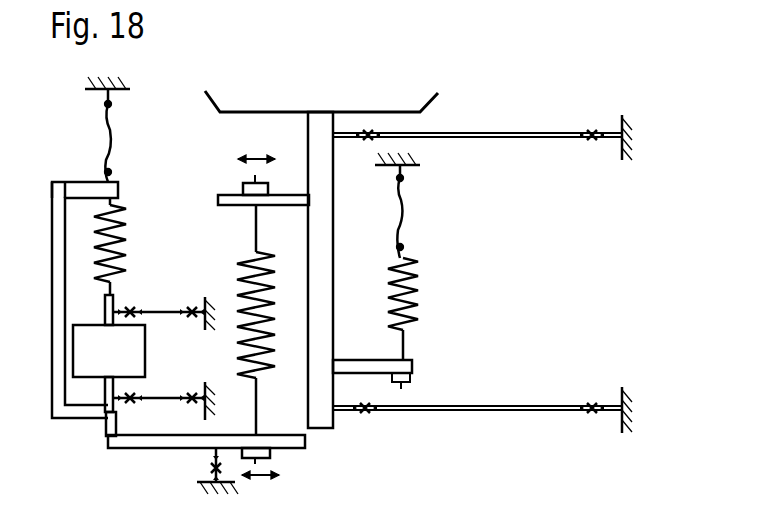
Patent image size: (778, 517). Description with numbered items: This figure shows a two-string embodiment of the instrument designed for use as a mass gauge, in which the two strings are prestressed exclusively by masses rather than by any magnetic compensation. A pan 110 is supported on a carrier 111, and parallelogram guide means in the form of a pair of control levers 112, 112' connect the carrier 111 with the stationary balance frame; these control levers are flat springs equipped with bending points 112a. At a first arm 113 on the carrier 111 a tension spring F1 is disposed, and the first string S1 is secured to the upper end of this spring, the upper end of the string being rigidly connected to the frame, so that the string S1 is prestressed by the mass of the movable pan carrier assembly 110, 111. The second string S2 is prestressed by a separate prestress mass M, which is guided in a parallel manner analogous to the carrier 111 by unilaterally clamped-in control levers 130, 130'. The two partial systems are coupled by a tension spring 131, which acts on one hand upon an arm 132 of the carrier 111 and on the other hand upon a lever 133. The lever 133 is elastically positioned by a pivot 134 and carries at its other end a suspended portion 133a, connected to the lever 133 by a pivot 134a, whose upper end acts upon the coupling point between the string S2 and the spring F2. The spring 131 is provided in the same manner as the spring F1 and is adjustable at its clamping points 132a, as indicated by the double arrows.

The pan 110 is at (290, 111).
The carrier 111 is at (326, 430).
The control lever 112 is at (482, 127).
The control lever 112' is at (482, 437).
The bending points 112a is at (368, 128).
The first arm 113 is at (413, 367).
The control lever 130 is at (164, 321).
The control lever 130' is at (164, 390).
The tension spring 131 is at (248, 262).
The arm 132 is at (218, 206).
The slider element 132a is at (243, 188).
The lever 133 is at (122, 452).
The suspended portion 133a is at (70, 181).
The pivot 134 is at (208, 468).
The pivot 134a is at (105, 432).
The first string S1 is at (406, 215).
The second string S2 is at (113, 127).
The tension spring F1 is at (419, 290).
The spring F2 is at (128, 268).
The prestress mass M is at (82, 325).